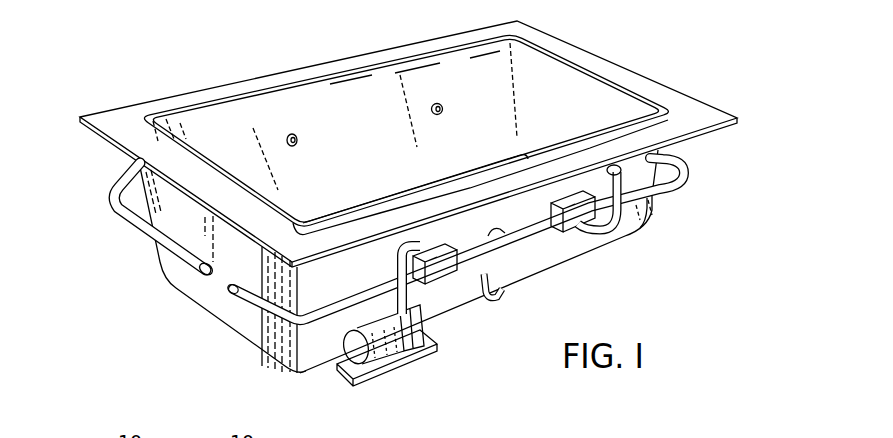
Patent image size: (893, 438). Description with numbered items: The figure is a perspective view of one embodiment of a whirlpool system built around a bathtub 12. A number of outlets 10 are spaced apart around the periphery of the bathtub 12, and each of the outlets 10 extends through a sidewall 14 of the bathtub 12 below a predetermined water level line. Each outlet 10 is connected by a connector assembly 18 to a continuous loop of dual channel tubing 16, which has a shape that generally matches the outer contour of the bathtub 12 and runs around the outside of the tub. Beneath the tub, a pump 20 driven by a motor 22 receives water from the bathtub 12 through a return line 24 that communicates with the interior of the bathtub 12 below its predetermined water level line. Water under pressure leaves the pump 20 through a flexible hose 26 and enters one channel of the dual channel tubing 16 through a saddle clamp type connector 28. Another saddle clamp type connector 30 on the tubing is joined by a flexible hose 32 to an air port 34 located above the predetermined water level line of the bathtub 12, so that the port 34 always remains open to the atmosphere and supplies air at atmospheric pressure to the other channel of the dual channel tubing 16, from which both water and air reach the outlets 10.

The outlets 10 is at (296, 134).
The bathtub 12 is at (612, 55).
The sidewall 14 is at (357, 165).
The dual channel tubing 16 is at (110, 197).
The connector assembly 18 is at (493, 229).
The pump 20 is at (413, 334).
The motor 22 is at (355, 348).
The return line 24 is at (500, 296).
The flexible hose 26 is at (395, 305).
The saddle clamp type connector 28 is at (453, 232).
The saddle clamp type connector 30 is at (568, 196).
The flexible hose 32 is at (615, 240).
The air port 34 is at (618, 163).